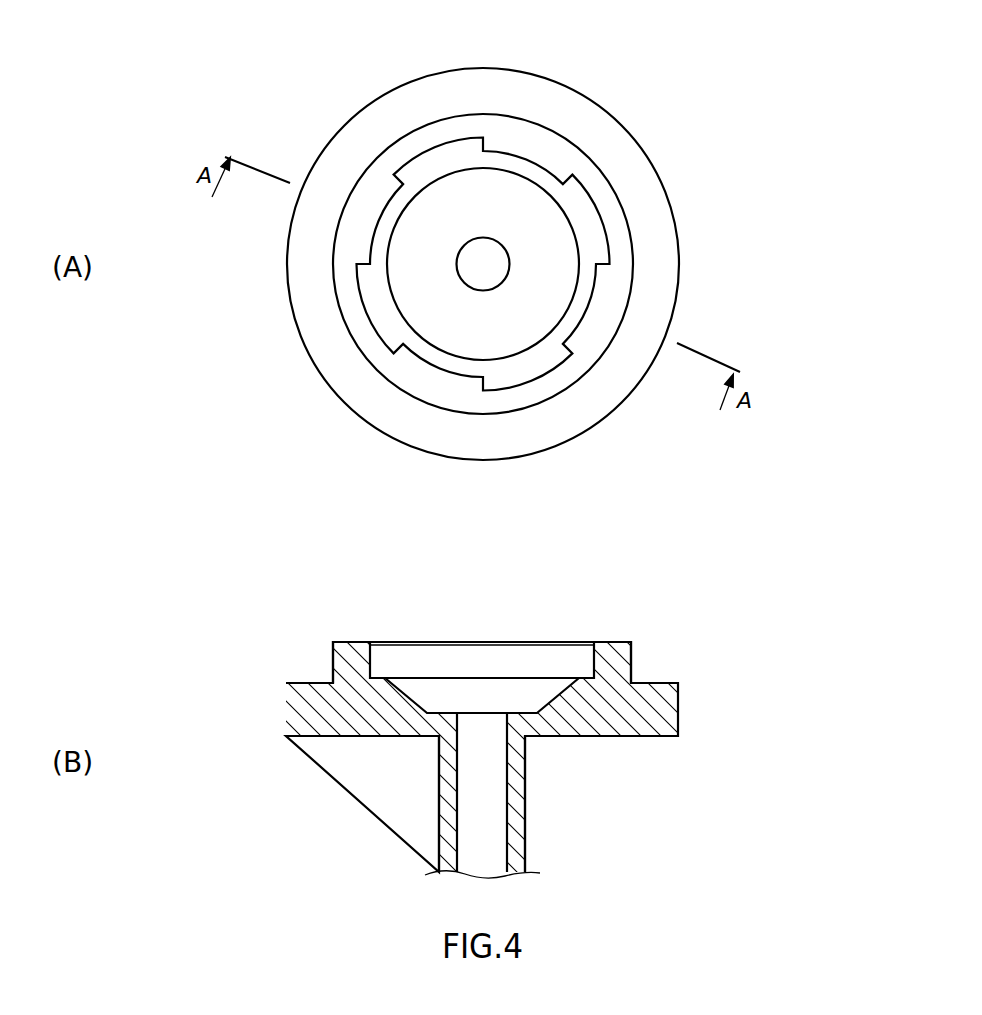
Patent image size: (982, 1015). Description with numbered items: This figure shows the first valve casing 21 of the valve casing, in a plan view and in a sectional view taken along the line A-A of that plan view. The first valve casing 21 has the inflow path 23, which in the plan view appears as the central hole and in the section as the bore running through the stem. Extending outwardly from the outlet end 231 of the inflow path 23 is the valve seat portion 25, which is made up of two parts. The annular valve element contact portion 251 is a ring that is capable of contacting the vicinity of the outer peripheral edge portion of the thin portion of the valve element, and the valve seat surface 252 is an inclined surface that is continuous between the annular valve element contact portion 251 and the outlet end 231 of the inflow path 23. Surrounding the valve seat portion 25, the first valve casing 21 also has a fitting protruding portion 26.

The rotor / base body 21 is at (827, 93).
The shaft 23 is at (492, 860).
The through hole of shaft 231 is at (477, 258).
The recess 25 is at (539, 356).
The cylindrical wall of recess 251 is at (572, 227).
The inclined bottom surface of recess 252 is at (501, 368).
The peripheral wall portion 26 is at (610, 303).